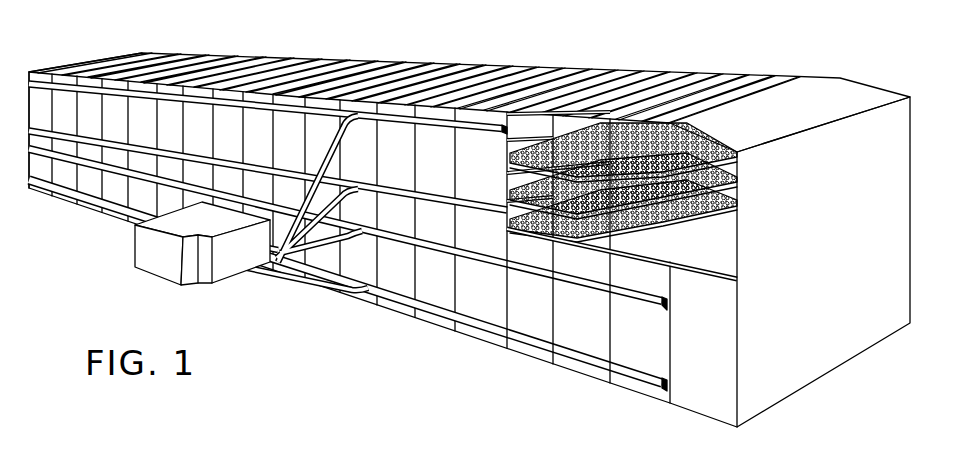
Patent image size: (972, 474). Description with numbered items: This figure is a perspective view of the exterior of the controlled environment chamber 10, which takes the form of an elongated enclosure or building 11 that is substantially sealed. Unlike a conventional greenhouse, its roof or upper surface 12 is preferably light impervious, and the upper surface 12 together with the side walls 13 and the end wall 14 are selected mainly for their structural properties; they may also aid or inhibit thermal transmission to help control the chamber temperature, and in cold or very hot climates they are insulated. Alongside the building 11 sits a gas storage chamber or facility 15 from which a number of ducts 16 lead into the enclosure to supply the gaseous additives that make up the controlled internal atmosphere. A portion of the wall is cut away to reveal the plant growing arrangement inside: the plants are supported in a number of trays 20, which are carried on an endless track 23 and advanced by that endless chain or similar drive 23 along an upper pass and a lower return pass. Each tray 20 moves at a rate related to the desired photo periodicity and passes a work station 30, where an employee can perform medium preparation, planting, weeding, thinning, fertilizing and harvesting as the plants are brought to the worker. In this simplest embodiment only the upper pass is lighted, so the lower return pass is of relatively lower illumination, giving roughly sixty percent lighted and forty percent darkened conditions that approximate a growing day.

The chamber 10 is at (381, 58).
The elongated enclosure or building 11 is at (93, 107).
The upper surface 12 is at (647, 77).
The side walls 13 is at (43, 107).
The end wall 14 is at (857, 318).
The gas storage chamber or facility 15 is at (187, 217).
The ducts 16 is at (273, 237).
The trays 20 is at (633, 222).
The endless track 23 is at (515, 139).
The work station 30 is at (720, 238).